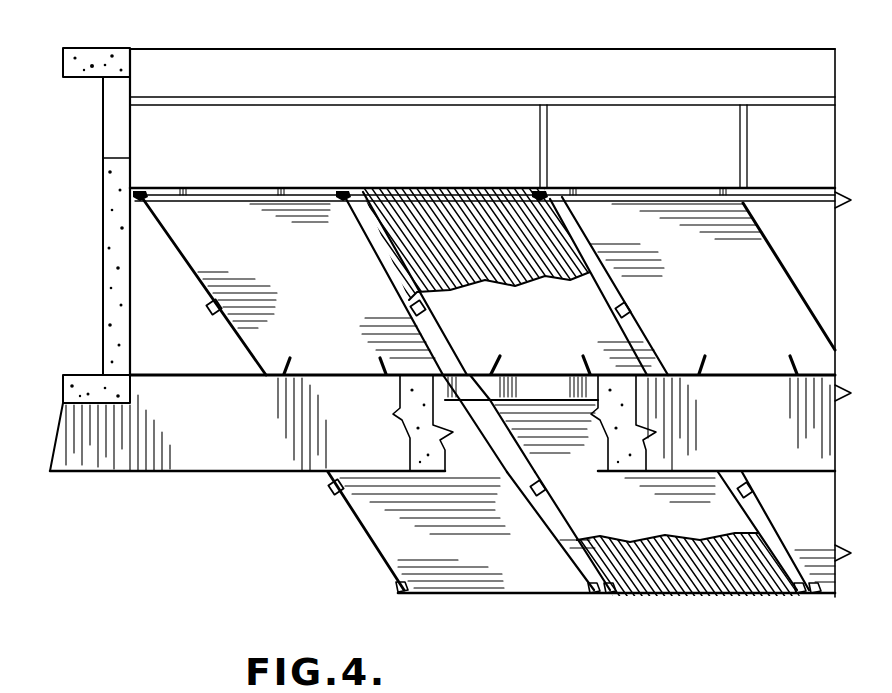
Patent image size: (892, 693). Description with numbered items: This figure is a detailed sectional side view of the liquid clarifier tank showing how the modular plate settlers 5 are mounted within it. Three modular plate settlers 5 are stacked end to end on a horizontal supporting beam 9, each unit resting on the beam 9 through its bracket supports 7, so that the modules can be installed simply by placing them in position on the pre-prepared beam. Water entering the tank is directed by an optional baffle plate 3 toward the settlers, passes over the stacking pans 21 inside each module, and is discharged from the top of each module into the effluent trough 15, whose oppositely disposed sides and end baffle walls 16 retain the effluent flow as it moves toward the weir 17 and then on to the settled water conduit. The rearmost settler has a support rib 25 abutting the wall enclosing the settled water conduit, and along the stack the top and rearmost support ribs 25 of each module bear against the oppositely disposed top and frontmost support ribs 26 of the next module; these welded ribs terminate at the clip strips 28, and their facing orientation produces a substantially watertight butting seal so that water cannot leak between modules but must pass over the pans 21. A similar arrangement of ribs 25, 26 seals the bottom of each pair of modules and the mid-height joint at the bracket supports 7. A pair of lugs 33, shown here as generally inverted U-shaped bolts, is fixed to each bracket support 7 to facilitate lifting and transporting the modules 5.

The baffle plate 3 is at (110, 226).
The modular plate settler 5 is at (331, 287).
The bracket support 7 is at (338, 378).
The horizontal supporting beam 9 is at (243, 433).
The effluent trough 15 is at (224, 128).
The end baffle wall 16 is at (404, 136).
The weir 17 is at (143, 138).
The stacking pan 21 is at (455, 236).
The support rib 25 is at (146, 206).
The support rib 26 is at (337, 190).
The clip strip 28 is at (238, 197).
The lug 33 is at (380, 357).